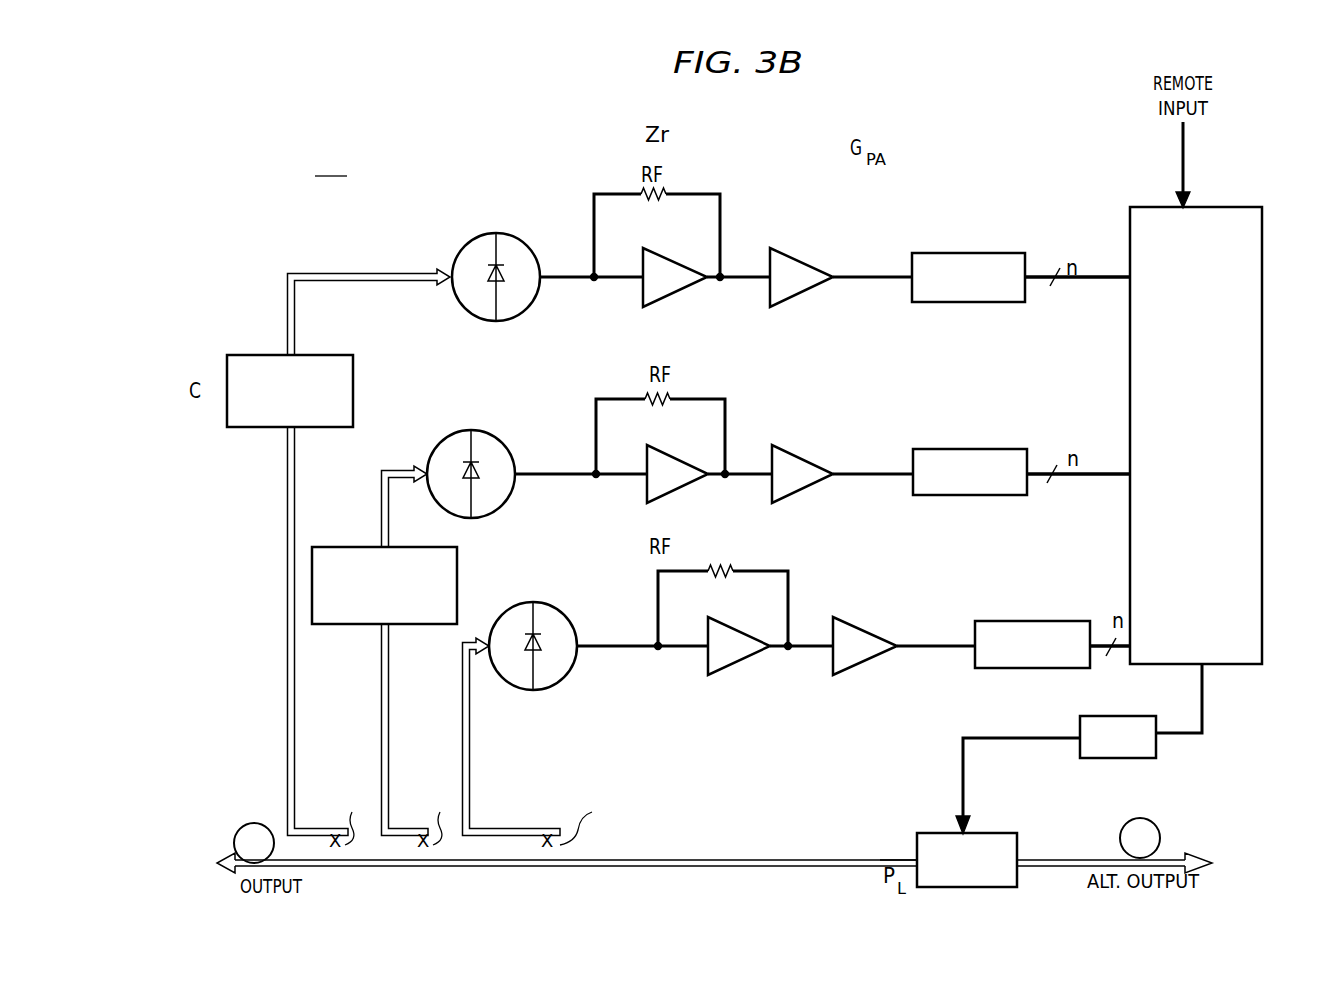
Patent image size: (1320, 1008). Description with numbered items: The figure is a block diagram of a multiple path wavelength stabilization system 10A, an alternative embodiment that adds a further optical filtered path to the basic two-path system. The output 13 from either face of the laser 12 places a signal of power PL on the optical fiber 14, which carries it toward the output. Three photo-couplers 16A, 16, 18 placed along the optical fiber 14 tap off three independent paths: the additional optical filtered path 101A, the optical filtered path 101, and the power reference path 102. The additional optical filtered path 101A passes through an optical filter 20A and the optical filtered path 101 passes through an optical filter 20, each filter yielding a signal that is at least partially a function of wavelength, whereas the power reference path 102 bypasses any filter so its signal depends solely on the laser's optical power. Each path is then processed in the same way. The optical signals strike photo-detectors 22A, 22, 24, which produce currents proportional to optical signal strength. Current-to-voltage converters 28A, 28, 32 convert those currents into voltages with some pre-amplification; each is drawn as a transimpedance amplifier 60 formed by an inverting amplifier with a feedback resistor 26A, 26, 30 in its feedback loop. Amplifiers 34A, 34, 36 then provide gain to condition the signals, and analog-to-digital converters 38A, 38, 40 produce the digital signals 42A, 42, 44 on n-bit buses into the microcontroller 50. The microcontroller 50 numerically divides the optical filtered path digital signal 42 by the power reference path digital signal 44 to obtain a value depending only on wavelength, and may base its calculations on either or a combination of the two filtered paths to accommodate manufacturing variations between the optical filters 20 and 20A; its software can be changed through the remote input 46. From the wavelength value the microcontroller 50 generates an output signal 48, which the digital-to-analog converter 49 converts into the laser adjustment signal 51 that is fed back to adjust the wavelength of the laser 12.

The multiple path wavelength stabilization system 10A is at (331, 165).
The laser 12 is at (965, 887).
The output 13 is at (903, 852).
The optical fiber 14 is at (447, 870).
The photo-coupler 16A is at (354, 816).
The photo coupler 16 is at (440, 816).
The photo coupler 18 is at (587, 817).
The optical filter 20A is at (227, 412).
The optical filter 20 is at (457, 604).
The photo-detector 22A is at (512, 318).
The photo detector 22 is at (505, 510).
The photo detector 24 is at (562, 680).
The feedback resistor 26A is at (668, 193).
The feedback resistor 26 is at (672, 398).
The current-to-voltage converter 28A is at (674, 294).
The current-to-voltage converter 28 is at (676, 490).
The feedback resistor 30 is at (733, 570).
The current-to-voltage converter 32 is at (742, 660).
The amplifier 34A is at (806, 294).
The amplifier 34 is at (805, 495).
The amplifier 36 is at (866, 664).
The analog-to-digital converter 38A is at (986, 303).
The analog-to-digital converter 38 is at (985, 496).
The analog-to-digital converter 40 is at (1042, 669).
The digital signal 42A is at (1122, 281).
The optical filtered path digital signal 42 is at (1108, 478).
The power reference path digital signal 44 is at (1128, 650).
The remote input 46 is at (1183, 162).
The output signal 48 is at (1202, 700).
The digital-to-analog converter 49 is at (1133, 758).
The microcontroller 50 is at (1262, 358).
The laser adjustment signal 51 is at (1027, 738).
The transimpedance amplifier 60 is at (594, 205).
The additional optical filtered path 101A is at (297, 776).
The optical filtered path 101 is at (391, 763).
The power reference path 102 is at (470, 785).